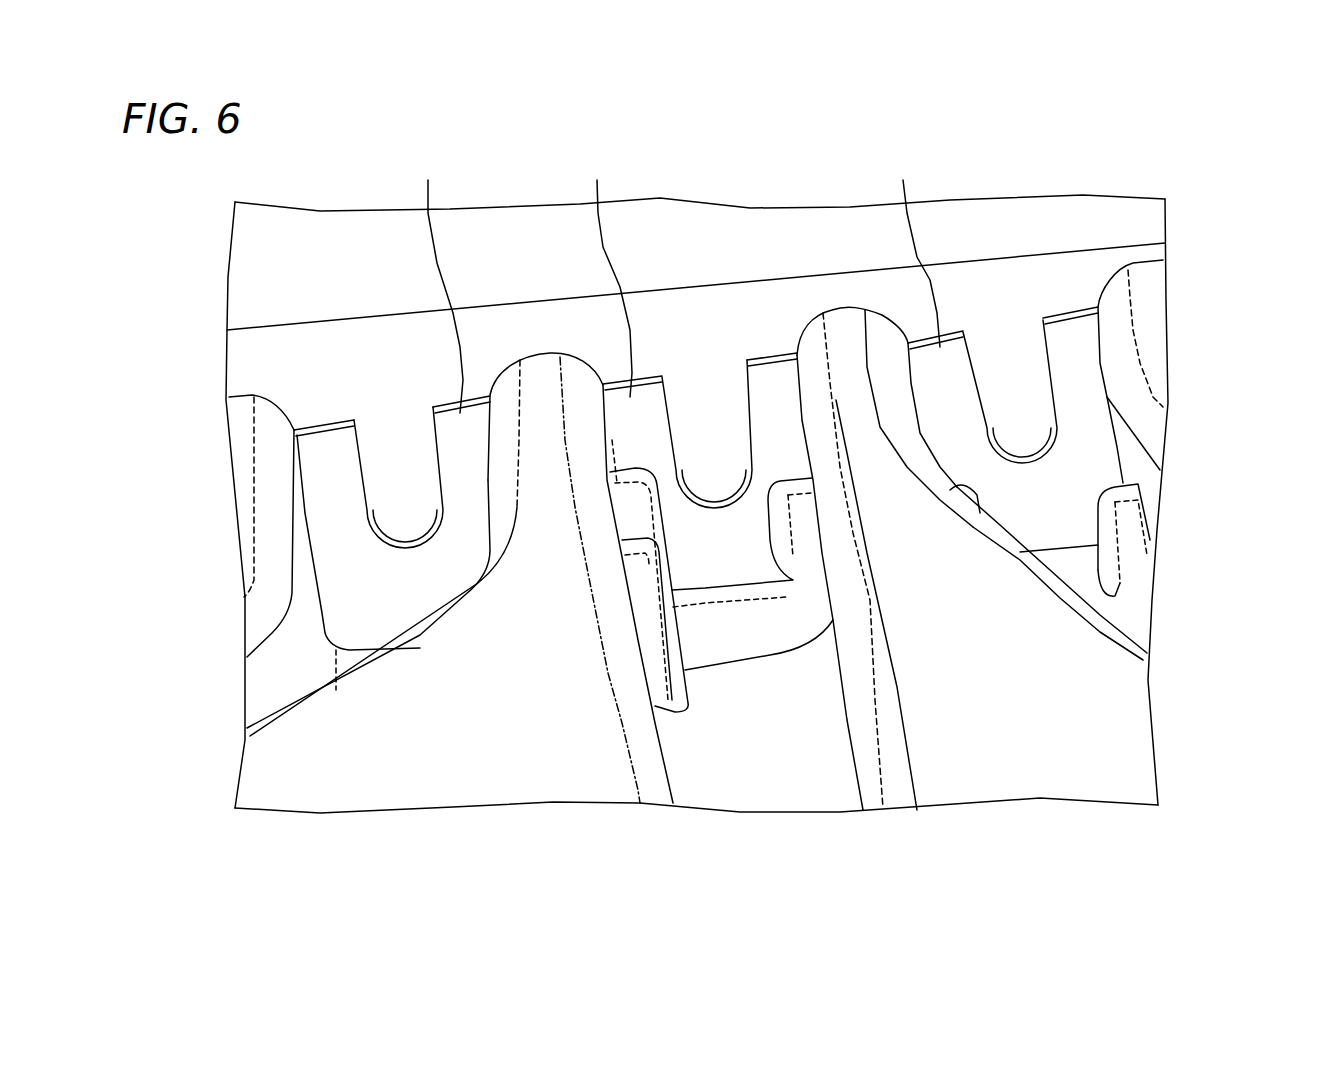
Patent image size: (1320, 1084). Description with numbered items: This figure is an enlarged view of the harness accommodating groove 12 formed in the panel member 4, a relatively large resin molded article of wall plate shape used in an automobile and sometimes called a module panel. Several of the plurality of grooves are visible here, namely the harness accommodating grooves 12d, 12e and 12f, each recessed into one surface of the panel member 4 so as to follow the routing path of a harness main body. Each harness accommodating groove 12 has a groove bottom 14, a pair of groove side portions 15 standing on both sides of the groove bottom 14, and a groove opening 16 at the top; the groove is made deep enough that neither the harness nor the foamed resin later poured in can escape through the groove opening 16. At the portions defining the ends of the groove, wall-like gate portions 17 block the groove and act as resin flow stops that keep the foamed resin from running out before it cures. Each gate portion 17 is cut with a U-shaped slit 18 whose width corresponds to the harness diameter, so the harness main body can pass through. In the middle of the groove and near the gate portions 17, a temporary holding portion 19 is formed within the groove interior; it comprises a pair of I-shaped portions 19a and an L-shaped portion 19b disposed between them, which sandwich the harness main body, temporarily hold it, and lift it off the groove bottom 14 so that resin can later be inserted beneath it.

The panel member 4 is at (675, 501).
The harness accommodating groove 12 is at (702, 625).
The harness accommodating groove 12d is at (1131, 539).
The harness accommodating groove 12e is at (745, 625).
The harness accommodating groove 12f is at (304, 585).
The groove bottom 14 is at (696, 843).
The groove side portion 15 is at (665, 743).
The groove opening 16 is at (822, 651).
The gate portion 17 is at (696, 476).
The slit 18 is at (358, 453).
The temporary holding portion 19 is at (858, 590).
The I-shaped portion 19a is at (628, 512).
The L-shaped portion 19b is at (833, 548).